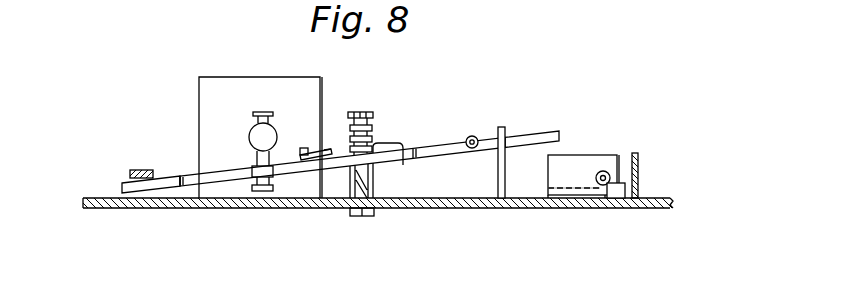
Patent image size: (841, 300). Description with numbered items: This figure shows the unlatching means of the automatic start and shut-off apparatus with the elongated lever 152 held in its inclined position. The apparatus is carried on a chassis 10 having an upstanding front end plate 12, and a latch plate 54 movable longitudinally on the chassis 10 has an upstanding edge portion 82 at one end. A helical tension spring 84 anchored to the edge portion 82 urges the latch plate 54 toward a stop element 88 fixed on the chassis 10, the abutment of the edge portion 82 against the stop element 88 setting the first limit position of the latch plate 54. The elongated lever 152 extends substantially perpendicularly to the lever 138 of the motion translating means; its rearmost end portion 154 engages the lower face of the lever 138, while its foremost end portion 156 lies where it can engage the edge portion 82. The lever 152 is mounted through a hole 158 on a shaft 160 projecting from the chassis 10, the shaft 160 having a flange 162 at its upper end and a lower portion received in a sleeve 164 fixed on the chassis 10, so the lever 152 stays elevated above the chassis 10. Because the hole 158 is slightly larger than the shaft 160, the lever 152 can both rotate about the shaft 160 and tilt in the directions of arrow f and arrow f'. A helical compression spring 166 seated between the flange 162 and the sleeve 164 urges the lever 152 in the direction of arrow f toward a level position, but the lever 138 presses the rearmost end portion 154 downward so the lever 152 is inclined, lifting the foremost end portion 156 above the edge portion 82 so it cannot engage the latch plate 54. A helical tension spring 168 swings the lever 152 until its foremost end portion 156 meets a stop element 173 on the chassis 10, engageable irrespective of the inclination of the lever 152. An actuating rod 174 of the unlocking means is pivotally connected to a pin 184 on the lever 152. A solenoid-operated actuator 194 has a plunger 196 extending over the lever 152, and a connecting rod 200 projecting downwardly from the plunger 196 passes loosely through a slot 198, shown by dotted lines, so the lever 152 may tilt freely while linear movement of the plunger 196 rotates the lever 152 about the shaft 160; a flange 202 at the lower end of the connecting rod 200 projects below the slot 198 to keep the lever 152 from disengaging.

The chassis 10 is at (151, 211).
The front end plate 12 is at (638, 157).
The latch plate 54 is at (548, 190).
The upstanding edge portion 82 is at (594, 155).
The helical tension spring 84 is at (597, 185).
The stop element 88 is at (614, 191).
The lever 138 is at (143, 170).
The elongated lever 152 is at (441, 139).
The rearmost end portion 154 is at (122, 190).
The foremost end portion 156 is at (552, 131).
The hole 158 is at (391, 212).
The shaft 160 is at (374, 130).
The flange 162 is at (351, 112).
The sleeve 164 is at (345, 193).
The helical compression spring 166 is at (394, 170).
The helical tension spring 168 is at (470, 149).
The stop element 173 is at (503, 127).
The actuating rod 174 is at (328, 148).
The pin 184 is at (305, 148).
The solenoid-operated actuator 194 is at (199, 101).
The plunger 196 is at (250, 135).
The slot 198 is at (253, 178).
The connecting rod 200 is at (273, 177).
The flange 202 is at (263, 191).
The arrow f is at (432, 210).
The arrow f' is at (428, 98).